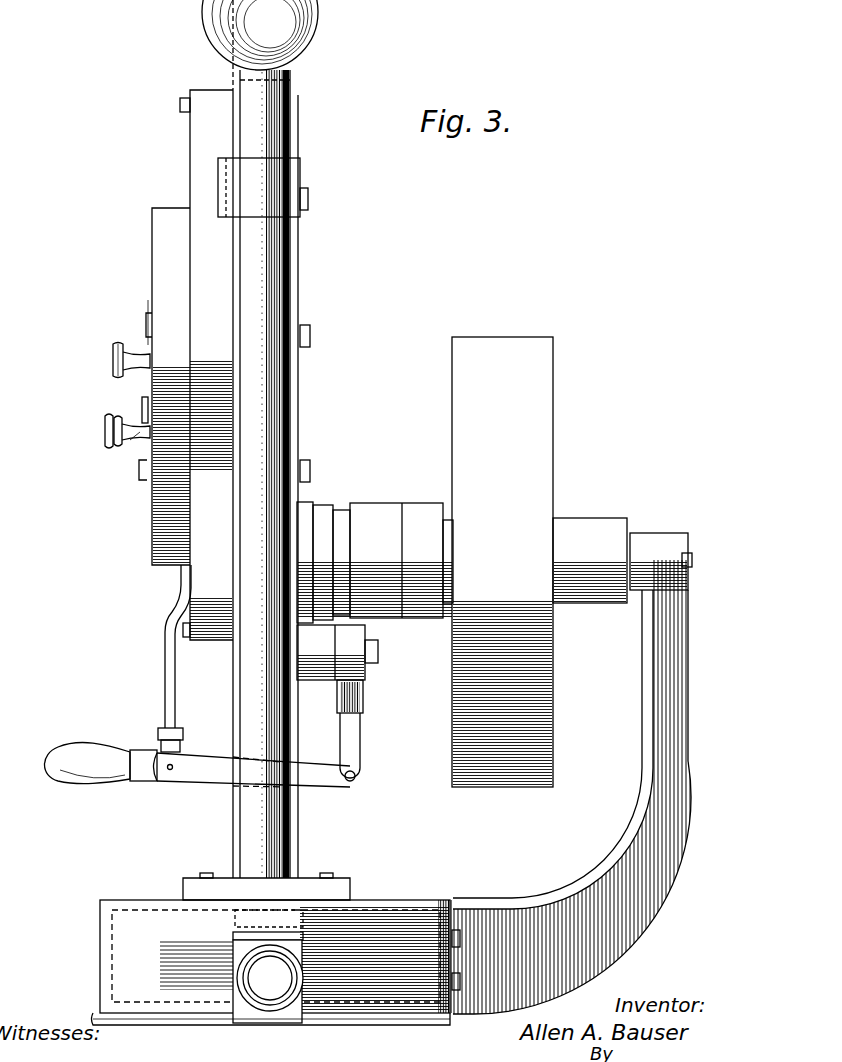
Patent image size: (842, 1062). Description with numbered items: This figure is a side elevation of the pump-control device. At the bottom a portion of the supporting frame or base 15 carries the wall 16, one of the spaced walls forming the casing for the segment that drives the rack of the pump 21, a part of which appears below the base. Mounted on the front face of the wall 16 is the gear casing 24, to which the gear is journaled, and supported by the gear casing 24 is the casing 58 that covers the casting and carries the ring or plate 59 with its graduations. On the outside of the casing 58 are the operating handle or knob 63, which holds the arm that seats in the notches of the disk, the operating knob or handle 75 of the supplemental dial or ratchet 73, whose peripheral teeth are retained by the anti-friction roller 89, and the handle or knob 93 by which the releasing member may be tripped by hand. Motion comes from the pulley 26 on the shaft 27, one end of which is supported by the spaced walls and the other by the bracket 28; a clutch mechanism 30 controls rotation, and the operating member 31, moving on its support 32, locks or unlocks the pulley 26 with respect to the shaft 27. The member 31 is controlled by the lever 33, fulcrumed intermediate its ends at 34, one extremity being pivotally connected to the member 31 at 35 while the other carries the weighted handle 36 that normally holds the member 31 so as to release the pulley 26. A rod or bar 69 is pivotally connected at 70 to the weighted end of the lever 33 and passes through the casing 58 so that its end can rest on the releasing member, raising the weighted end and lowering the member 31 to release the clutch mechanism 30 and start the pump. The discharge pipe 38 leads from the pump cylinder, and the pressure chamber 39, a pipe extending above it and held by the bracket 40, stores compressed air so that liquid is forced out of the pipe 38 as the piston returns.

The supporting frame or base 15 is at (392, 916).
The wall 16 is at (236, 250).
The pump 21 is at (306, 1006).
The gear casing 24 is at (200, 153).
The pulley 26 is at (505, 358).
The shaft 27 is at (692, 566).
The bracket 28 is at (676, 737).
The clutch mechanism 30 is at (373, 519).
The operating member 31 is at (340, 618).
The support 32 is at (318, 657).
The lever 33 is at (215, 773).
The fulcrum 34 is at (292, 786).
The pivotal connection 35 is at (356, 782).
The weighted handle 36 is at (114, 778).
The discharge pipe 38 is at (270, 990).
The pressure chamber 39 is at (272, 304).
The bracket 40 is at (300, 186).
The casing 58 is at (152, 275).
The ring or plate 59 is at (148, 342).
The operating handle or knob 63 is at (130, 440).
The rod or bar 69 is at (165, 688).
The pivotal connection 70 is at (173, 765).
The supplemental dial or ratchet 73 is at (142, 405).
The operating knob or handle 75 is at (105, 426).
The anti-friction roller 89 is at (140, 480).
The handle or knob 93 is at (115, 351).